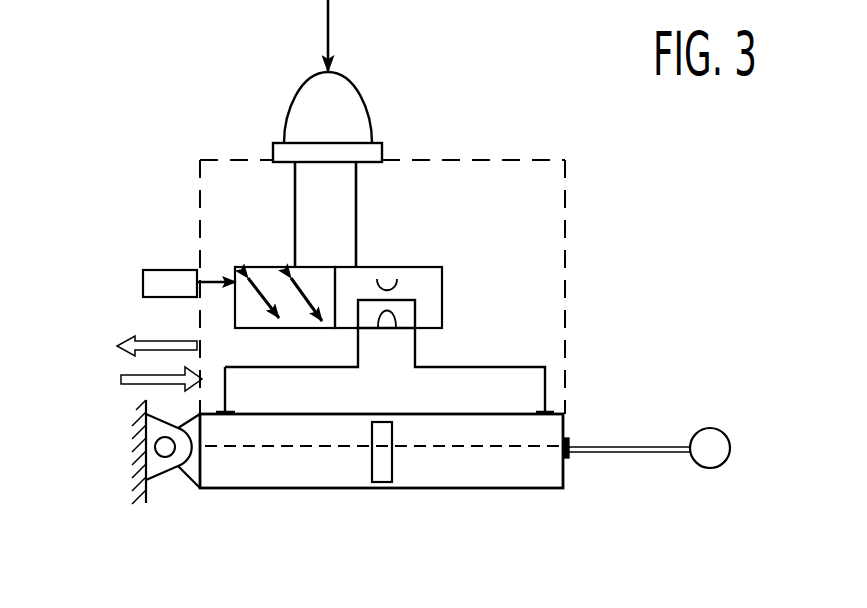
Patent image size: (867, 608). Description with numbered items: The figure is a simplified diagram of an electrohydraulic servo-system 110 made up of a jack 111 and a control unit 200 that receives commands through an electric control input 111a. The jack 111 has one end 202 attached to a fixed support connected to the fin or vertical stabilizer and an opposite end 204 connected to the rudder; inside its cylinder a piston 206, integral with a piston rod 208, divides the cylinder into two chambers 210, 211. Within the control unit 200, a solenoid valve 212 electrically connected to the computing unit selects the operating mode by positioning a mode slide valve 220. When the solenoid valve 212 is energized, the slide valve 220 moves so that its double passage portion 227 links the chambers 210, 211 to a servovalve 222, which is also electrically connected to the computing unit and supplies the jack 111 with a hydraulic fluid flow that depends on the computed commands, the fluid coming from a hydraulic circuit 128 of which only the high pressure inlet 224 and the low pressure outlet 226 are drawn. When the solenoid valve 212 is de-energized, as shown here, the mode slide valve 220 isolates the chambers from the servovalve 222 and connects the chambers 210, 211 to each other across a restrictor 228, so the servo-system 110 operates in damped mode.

The electric control input 111a is at (283, 93).
The servovalve 222 is at (352, 134).
The control unit 200 is at (196, 160).
The solenoid valve 212 is at (162, 275).
The double passage portion 227 is at (273, 278).
The mode slide valve 220 is at (421, 263).
The restrictor 228 is at (397, 289).
The servo-system 110 is at (590, 278).
The hydraulic circuit 128 is at (164, 333).
The low pressure outlet 226 is at (155, 347).
The high pressure inlet 224 is at (134, 377).
The end of the jack 202 is at (190, 466).
The chamber 210 is at (273, 470).
The jack 111 is at (339, 492).
The piston 206 is at (388, 478).
The chamber 211 is at (498, 473).
The piston rod 208 is at (610, 448).
The end of the jack 204 is at (713, 462).